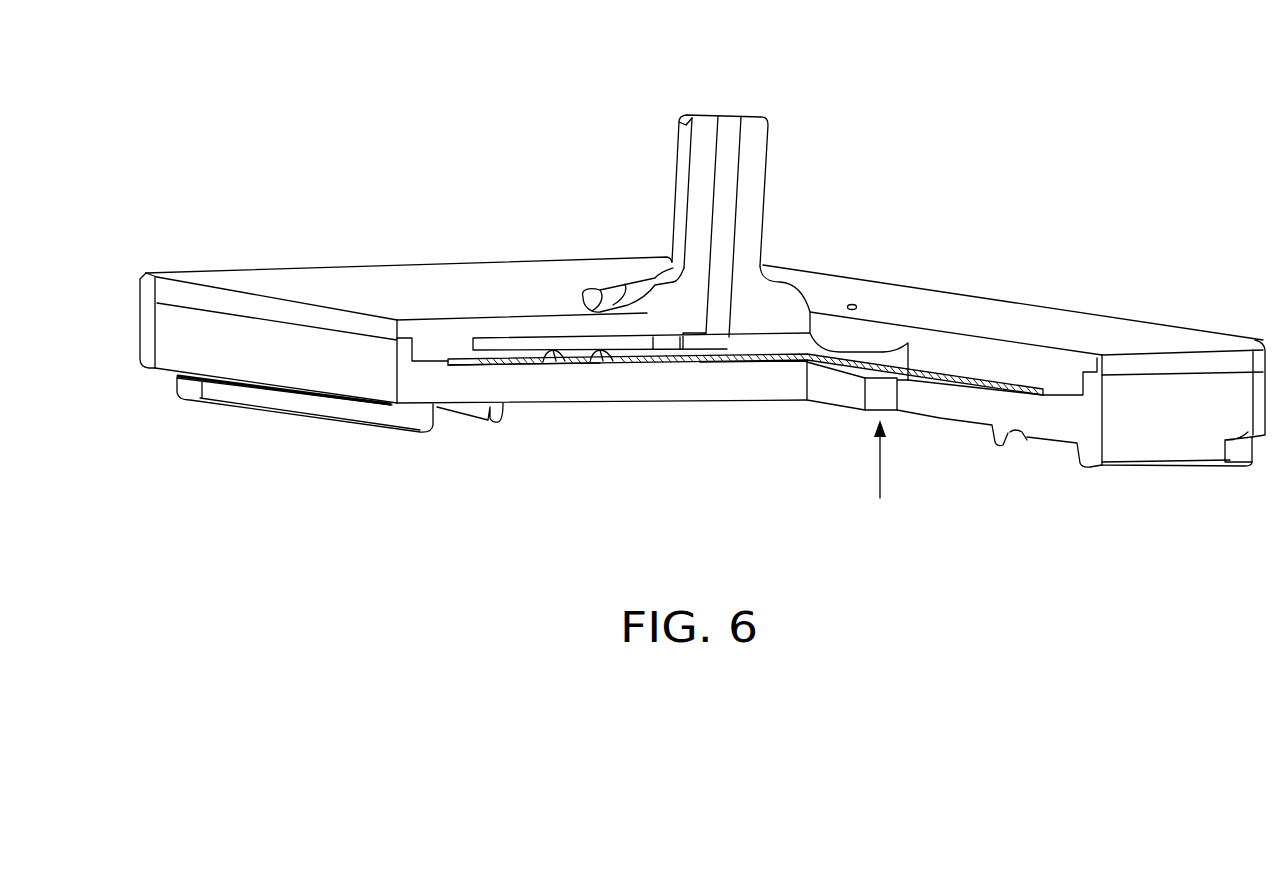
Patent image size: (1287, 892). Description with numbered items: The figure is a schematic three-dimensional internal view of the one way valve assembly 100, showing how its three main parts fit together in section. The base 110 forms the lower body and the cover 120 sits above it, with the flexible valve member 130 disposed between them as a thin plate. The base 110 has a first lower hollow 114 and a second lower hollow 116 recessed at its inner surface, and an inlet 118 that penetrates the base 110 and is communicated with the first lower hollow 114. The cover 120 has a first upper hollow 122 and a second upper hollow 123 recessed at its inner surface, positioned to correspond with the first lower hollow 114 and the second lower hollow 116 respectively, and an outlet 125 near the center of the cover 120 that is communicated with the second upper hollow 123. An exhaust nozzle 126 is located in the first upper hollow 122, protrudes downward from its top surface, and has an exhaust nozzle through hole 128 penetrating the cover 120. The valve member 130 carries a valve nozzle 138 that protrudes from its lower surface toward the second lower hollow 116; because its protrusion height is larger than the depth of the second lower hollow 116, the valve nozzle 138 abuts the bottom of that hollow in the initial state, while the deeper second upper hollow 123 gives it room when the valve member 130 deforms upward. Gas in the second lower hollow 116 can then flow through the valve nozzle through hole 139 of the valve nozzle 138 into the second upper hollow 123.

The one way valve assembly 100 is at (172, 160).
The base 110 is at (148, 338).
The first lower hollow 114 is at (790, 374).
The second lower hollow 116 is at (511, 374).
The inlet 118 is at (874, 404).
The cover 120 is at (150, 287).
The first upper hollow 122 is at (904, 342).
The second upper hollow 123 is at (522, 343).
The outlet 125 is at (728, 137).
The exhaust nozzle 126 is at (862, 345).
The exhaust nozzle through hole 128 is at (853, 296).
The valve member 130 is at (968, 383).
The valve nozzle 138 is at (595, 368).
The valve nozzle through hole 139 is at (577, 374).